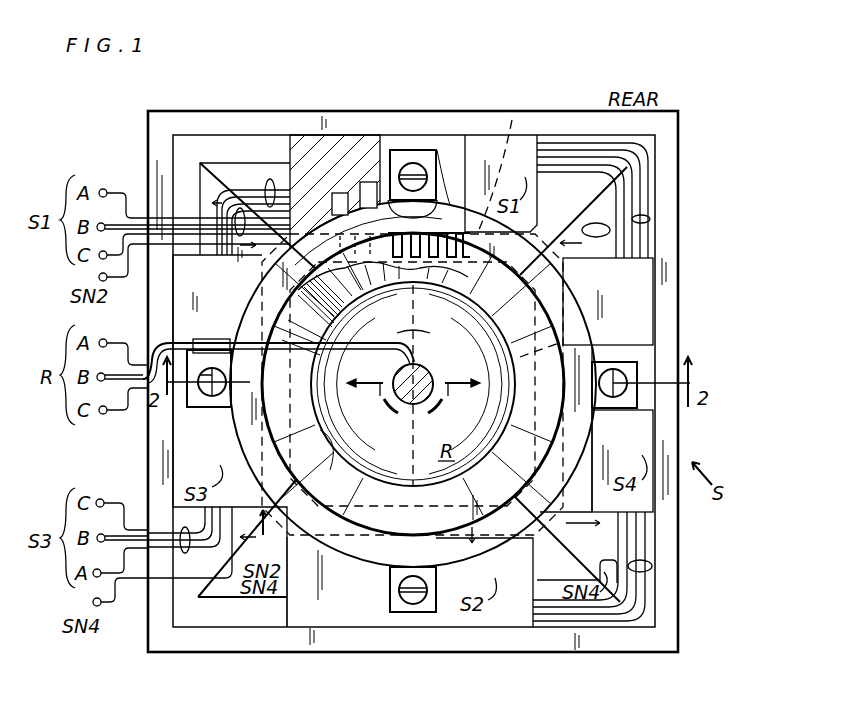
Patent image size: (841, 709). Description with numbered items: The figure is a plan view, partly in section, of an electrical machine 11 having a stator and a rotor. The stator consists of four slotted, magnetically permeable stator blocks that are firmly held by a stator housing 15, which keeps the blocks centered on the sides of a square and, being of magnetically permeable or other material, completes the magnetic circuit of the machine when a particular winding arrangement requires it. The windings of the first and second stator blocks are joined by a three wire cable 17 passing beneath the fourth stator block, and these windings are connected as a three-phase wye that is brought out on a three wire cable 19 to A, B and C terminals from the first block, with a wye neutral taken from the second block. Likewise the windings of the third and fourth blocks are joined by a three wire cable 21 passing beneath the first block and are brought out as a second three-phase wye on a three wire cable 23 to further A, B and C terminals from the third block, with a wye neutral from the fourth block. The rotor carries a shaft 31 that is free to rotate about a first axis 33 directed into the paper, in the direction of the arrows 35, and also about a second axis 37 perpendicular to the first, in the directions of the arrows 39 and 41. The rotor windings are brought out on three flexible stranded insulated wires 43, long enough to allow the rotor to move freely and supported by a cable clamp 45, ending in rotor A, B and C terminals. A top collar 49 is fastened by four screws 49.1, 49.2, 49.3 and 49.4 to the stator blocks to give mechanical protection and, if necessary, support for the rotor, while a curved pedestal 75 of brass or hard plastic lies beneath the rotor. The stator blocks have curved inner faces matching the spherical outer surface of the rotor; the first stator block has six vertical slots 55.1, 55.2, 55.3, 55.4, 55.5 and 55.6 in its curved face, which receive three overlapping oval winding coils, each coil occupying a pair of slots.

The electrical machine 11 is at (718, 147).
The stator housing 15 is at (676, 532).
The three wire cable 17 is at (652, 220).
The three wire cable 19 is at (238, 208).
The three wire cable 21 is at (268, 180).
The three wire cable 23 is at (185, 555).
The shaft 31 is at (422, 360).
The first axis 33 is at (430, 373).
The arrows 35 is at (415, 413).
The second axis 37 is at (418, 322).
The arrow 39 is at (358, 397).
The arrow 41 is at (463, 397).
The flexible stranded insulated wires 43 is at (392, 305).
The cable clamp 45 is at (238, 340).
The top collar 49 is at (388, 522).
The screw 49.1 is at (413, 163).
The screw 49.2 is at (618, 378).
The screw 49.3 is at (410, 605).
The screw 49.4 is at (193, 407).
The vertical slot 55.1 is at (334, 193).
The vertical slot 55.2 is at (368, 182).
The vertical slot 55.3 is at (388, 215).
The vertical slot 55.4 is at (460, 232).
The vertical slot 55.5 is at (462, 200).
The vertical slot 55.6 is at (552, 110).
The curved pedestal 75 is at (628, 580).